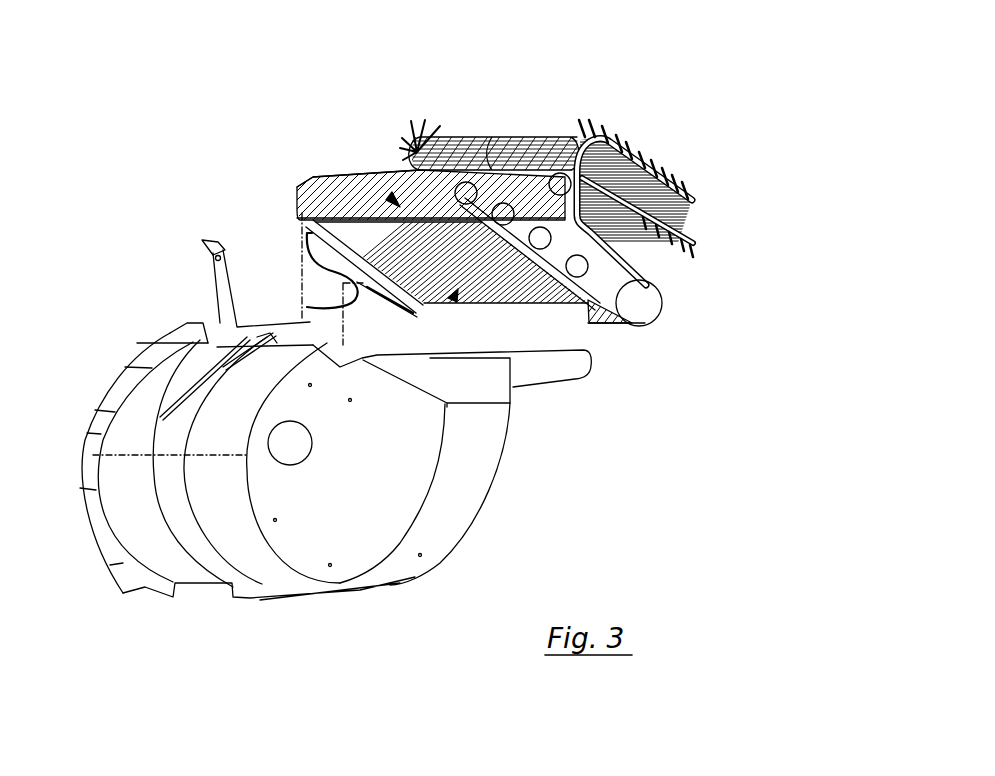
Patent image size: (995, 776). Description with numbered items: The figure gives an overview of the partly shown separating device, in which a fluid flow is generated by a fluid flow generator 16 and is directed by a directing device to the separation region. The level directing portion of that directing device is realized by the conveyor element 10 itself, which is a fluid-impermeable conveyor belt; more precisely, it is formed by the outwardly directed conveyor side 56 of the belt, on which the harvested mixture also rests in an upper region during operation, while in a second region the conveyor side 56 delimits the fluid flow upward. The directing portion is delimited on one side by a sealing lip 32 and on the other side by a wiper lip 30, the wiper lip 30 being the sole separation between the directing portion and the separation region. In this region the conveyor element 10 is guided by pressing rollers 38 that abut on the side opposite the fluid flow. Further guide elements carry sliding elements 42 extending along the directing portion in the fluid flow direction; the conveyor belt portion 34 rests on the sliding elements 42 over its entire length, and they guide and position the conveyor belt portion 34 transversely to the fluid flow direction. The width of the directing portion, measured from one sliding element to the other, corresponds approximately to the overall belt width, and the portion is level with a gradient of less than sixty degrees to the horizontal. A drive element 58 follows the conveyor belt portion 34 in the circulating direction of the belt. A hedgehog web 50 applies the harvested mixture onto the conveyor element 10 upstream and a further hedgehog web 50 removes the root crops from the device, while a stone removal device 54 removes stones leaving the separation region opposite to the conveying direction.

The conveyor element 10 is at (442, 180).
The fluid flow generator 16 is at (290, 483).
The wiper lip 30 is at (447, 327).
The sealing lip 32 is at (581, 303).
The conveyor belt portion 34 is at (317, 310).
The pressing rollers 38 is at (508, 208).
The sliding elements 42 is at (300, 212).
The hedgehog web 50 is at (503, 137).
The stone removal device 54 is at (567, 372).
The conveyor side 56 is at (395, 203).
The drive element 58 is at (643, 308).